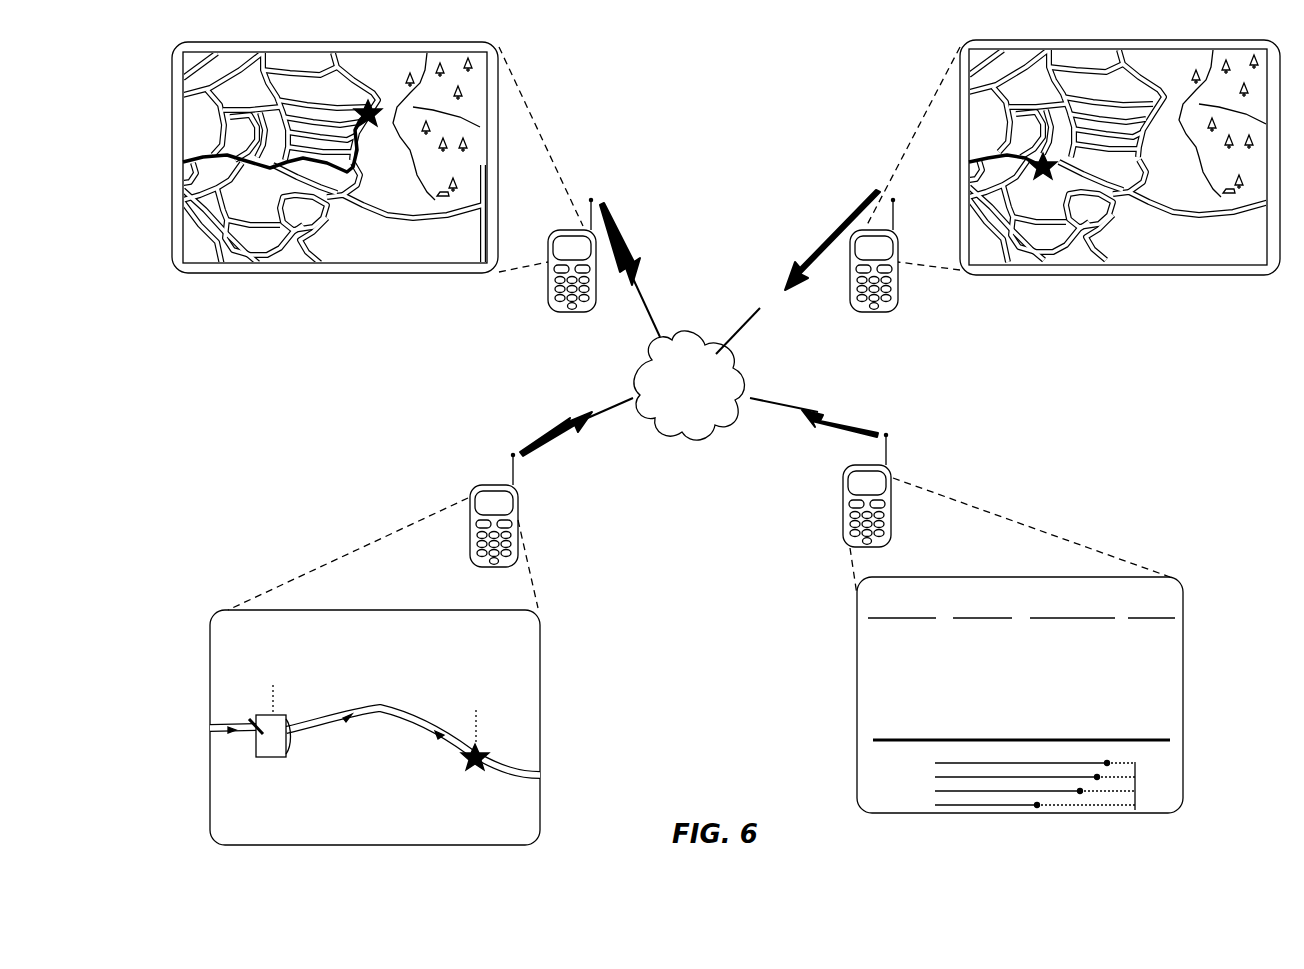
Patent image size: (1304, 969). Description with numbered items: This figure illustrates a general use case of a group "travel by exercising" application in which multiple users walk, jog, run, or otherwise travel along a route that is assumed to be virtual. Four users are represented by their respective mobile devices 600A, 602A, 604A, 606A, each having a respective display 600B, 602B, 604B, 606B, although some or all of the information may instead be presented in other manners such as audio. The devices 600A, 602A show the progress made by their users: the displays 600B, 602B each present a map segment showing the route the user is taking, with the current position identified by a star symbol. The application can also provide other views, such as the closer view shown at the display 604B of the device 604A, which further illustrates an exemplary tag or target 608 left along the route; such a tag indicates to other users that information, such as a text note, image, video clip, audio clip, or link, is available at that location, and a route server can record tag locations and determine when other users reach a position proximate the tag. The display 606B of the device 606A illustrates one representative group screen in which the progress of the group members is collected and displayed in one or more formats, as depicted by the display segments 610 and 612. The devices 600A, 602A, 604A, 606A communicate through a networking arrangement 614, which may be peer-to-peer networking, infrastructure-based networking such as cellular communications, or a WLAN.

The mobile device 600A is at (573, 312).
The display 600B is at (359, 273).
The mobile device 602A is at (878, 314).
The display 602B is at (1080, 275).
The mobile device 604A is at (518, 505).
The display 604B is at (418, 727).
The mobile device 606A is at (843, 503).
The display 606B is at (1063, 674).
The tag 608 is at (273, 758).
The display segment 610 is at (1180, 594).
The display segment 612 is at (1180, 748).
The networking arrangement 614 is at (706, 401).